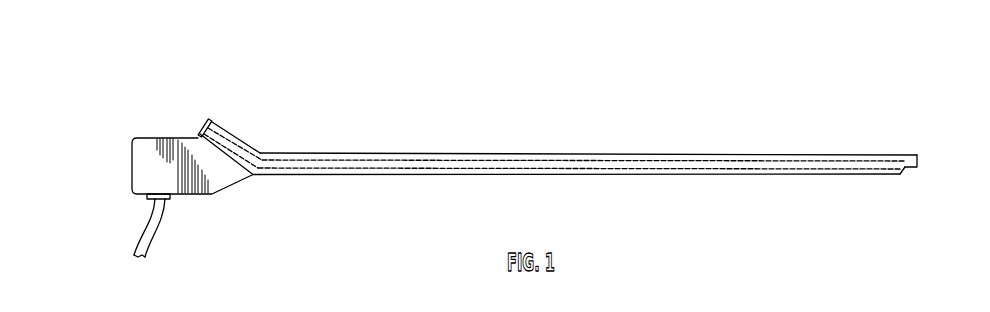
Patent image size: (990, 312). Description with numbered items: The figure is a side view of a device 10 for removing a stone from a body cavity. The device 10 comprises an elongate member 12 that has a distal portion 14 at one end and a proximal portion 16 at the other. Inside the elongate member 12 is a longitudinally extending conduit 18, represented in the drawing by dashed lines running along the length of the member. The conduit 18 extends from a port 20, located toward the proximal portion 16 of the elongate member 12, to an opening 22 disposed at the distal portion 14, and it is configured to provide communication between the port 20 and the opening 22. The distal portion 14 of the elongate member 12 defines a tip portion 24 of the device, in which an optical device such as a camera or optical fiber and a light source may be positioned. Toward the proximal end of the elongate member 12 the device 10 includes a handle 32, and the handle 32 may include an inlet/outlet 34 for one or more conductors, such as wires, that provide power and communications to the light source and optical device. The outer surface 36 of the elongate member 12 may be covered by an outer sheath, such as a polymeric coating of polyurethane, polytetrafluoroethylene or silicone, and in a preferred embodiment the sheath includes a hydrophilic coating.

The device 10 is at (335, 106).
The elongate member 12 is at (482, 152).
The distal portion 14 is at (900, 130).
The proximal portion 16 is at (127, 120).
The conduit 18 is at (405, 168).
The port 20 is at (204, 122).
The opening 22 is at (903, 171).
The tip portion 24 is at (918, 157).
The handle 32 is at (132, 161).
The inlet/outlet 34 is at (165, 232).
The outer surface 36 is at (500, 158).